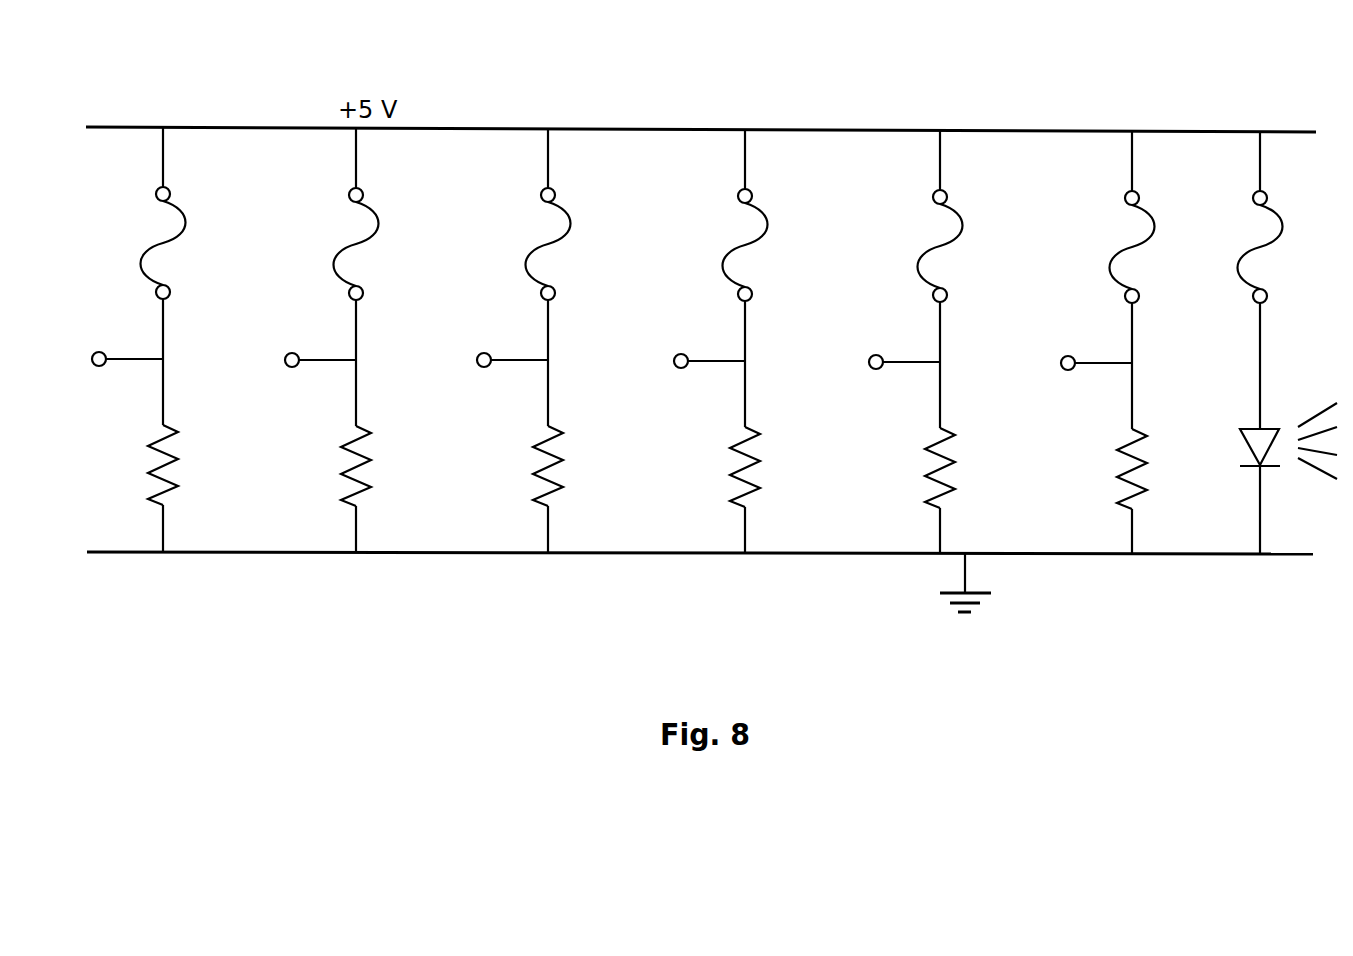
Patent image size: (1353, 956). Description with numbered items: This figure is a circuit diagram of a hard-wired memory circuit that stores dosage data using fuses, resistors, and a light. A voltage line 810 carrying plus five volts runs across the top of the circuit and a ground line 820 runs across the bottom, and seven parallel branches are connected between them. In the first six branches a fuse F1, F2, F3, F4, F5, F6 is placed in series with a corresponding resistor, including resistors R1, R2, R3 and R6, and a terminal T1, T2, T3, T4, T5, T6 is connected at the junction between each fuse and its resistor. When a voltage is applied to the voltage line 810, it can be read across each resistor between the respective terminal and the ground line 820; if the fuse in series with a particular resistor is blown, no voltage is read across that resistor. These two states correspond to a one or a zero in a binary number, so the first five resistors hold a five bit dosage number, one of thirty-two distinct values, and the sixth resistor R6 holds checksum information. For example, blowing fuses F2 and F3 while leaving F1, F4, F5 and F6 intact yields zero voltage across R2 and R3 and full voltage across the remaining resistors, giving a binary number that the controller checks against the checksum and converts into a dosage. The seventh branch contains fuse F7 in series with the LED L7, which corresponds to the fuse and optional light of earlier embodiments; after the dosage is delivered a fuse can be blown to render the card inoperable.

The voltage line 810 is at (978, 125).
The ground line 820 is at (372, 561).
The fuse F1 is at (145, 213).
The fuse F2 is at (338, 214).
The fuse F3 is at (530, 214).
The fuse F4 is at (727, 215).
The fuse F5 is at (922, 216).
The fuse F6 is at (1114, 217).
The fuse F7 is at (1284, 217).
The terminal T1 is at (106, 360).
The terminal T2 is at (299, 361).
The terminal T3 is at (491, 361).
The terminal T4 is at (688, 362).
The terminal T5 is at (883, 363).
The terminal T6 is at (1075, 364).
The resistor R1 is at (140, 465).
The resistor R2 is at (333, 466).
The resistor R3 is at (525, 466).
The resistor R6 is at (1109, 469).
The LED L7 is at (1289, 462).